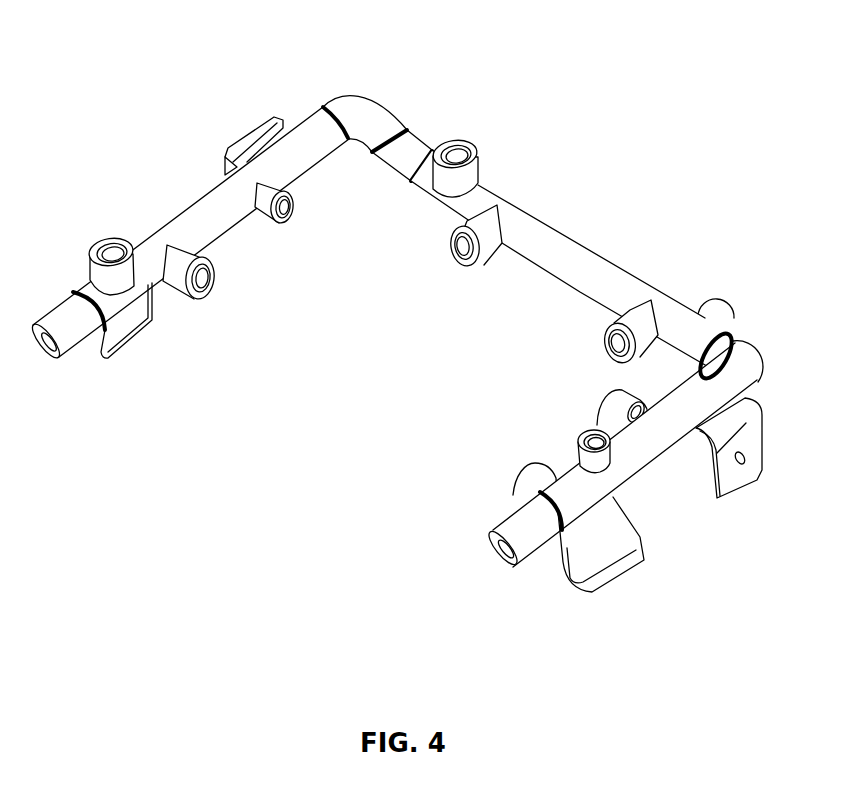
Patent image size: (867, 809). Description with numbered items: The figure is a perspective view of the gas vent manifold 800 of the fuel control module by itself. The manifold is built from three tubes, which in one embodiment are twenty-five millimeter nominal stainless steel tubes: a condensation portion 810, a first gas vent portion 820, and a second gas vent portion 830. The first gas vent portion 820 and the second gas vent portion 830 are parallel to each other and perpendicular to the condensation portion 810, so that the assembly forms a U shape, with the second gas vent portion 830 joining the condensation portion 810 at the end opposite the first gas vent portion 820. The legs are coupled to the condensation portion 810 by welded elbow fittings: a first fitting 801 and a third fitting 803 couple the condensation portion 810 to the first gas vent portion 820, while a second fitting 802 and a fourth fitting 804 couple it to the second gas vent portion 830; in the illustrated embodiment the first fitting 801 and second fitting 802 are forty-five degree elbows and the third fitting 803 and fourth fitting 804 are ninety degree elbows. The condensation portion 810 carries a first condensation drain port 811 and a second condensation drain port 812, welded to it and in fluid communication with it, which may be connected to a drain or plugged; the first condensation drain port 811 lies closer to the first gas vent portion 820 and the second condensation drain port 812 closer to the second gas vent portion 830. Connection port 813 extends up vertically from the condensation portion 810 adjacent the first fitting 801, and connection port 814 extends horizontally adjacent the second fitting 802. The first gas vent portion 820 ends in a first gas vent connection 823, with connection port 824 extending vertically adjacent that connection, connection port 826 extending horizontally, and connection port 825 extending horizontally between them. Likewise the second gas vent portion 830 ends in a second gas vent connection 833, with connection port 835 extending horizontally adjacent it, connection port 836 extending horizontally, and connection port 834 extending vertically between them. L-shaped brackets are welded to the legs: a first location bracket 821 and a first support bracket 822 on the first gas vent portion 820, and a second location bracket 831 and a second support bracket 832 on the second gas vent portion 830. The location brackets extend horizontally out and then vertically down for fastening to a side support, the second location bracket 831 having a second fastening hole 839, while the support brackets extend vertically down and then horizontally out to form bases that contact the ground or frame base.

The gas vent manifold 800 is at (133, 38).
The first fitting 801 is at (410, 146).
The second fitting 802 is at (728, 348).
The third fitting 803 is at (364, 113).
The fourth fitting 804 is at (766, 348).
The condensation portion 810 is at (557, 247).
The first condensation drain port 811 is at (493, 208).
The second condensation drain port 812 is at (631, 312).
The connection port 813 is at (453, 147).
The connection port 814 is at (720, 303).
The first gas vent portion 820 is at (211, 203).
The first location bracket 821 is at (262, 126).
The first support bracket 822 is at (124, 342).
The first gas vent connection 823 is at (51, 353).
The connection port 824 is at (112, 247).
The connection port 825 is at (211, 283).
The connection port 826 is at (291, 213).
The second gas vent portion 830 is at (628, 473).
The second location bracket 831 is at (752, 438).
The second support bracket 832 is at (618, 560).
The second gas vent connection 833 is at (502, 551).
The connection port 834 is at (592, 428).
The connection port 835 is at (524, 487).
The connection port 836 is at (620, 393).
The second fastening hole 839 is at (745, 460).